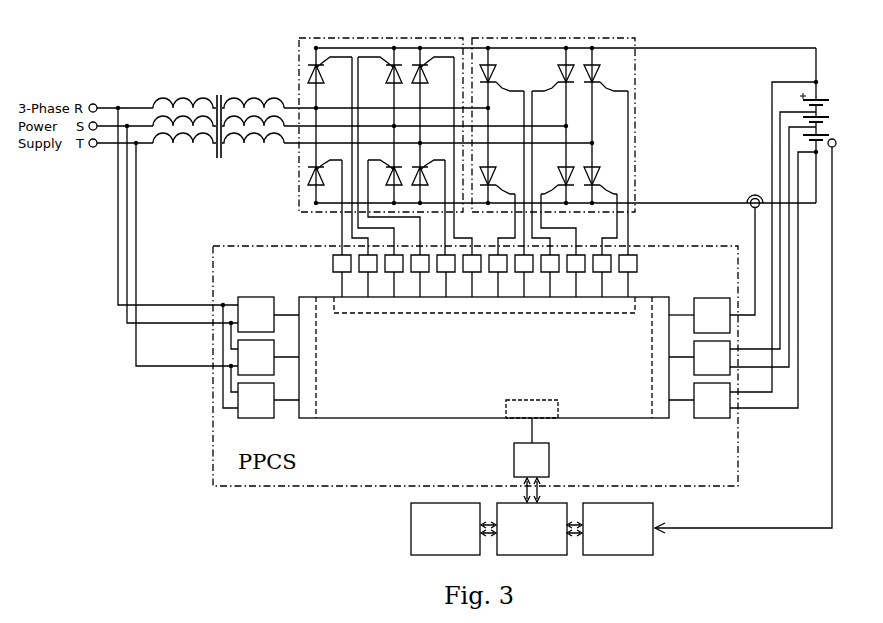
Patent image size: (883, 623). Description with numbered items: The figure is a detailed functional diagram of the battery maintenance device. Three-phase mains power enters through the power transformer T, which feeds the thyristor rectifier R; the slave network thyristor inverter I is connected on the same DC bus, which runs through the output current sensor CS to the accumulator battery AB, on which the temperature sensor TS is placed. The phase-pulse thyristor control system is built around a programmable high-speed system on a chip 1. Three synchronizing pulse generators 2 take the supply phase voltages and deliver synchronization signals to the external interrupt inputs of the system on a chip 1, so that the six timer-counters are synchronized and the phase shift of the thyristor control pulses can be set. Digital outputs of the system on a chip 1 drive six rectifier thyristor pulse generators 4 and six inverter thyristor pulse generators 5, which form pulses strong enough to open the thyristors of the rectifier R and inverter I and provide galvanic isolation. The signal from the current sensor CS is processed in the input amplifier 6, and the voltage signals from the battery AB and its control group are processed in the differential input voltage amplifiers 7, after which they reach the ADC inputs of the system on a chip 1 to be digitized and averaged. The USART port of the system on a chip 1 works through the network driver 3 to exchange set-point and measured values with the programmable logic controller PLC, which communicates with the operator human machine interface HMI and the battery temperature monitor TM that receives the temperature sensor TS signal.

The system on a chip 1 is at (484, 357).
The synchronizing pulse generators 2 is at (268, 357).
The network driver 3 is at (531, 460).
The thyristor pulse generators for rectifier 4 is at (407, 276).
The thyristor pulse generators for inverter 5 is at (563, 276).
The input amplifier 6 is at (699, 315).
The differential input voltage amplifiers 7 is at (699, 379).
The power transformer T is at (218, 113).
The thyristor rectifier R is at (557, 136).
The slave network thyristor inverter I is at (553, 136).
The accumulator battery AB is at (826, 125).
The temperature sensor TS is at (762, 333).
The output current sensor CS is at (746, 244).
The human machine interface panel HMI is at (445, 529).
The programmable logic controller PLC is at (532, 529).
The battery temperature monitor TM is at (618, 529).